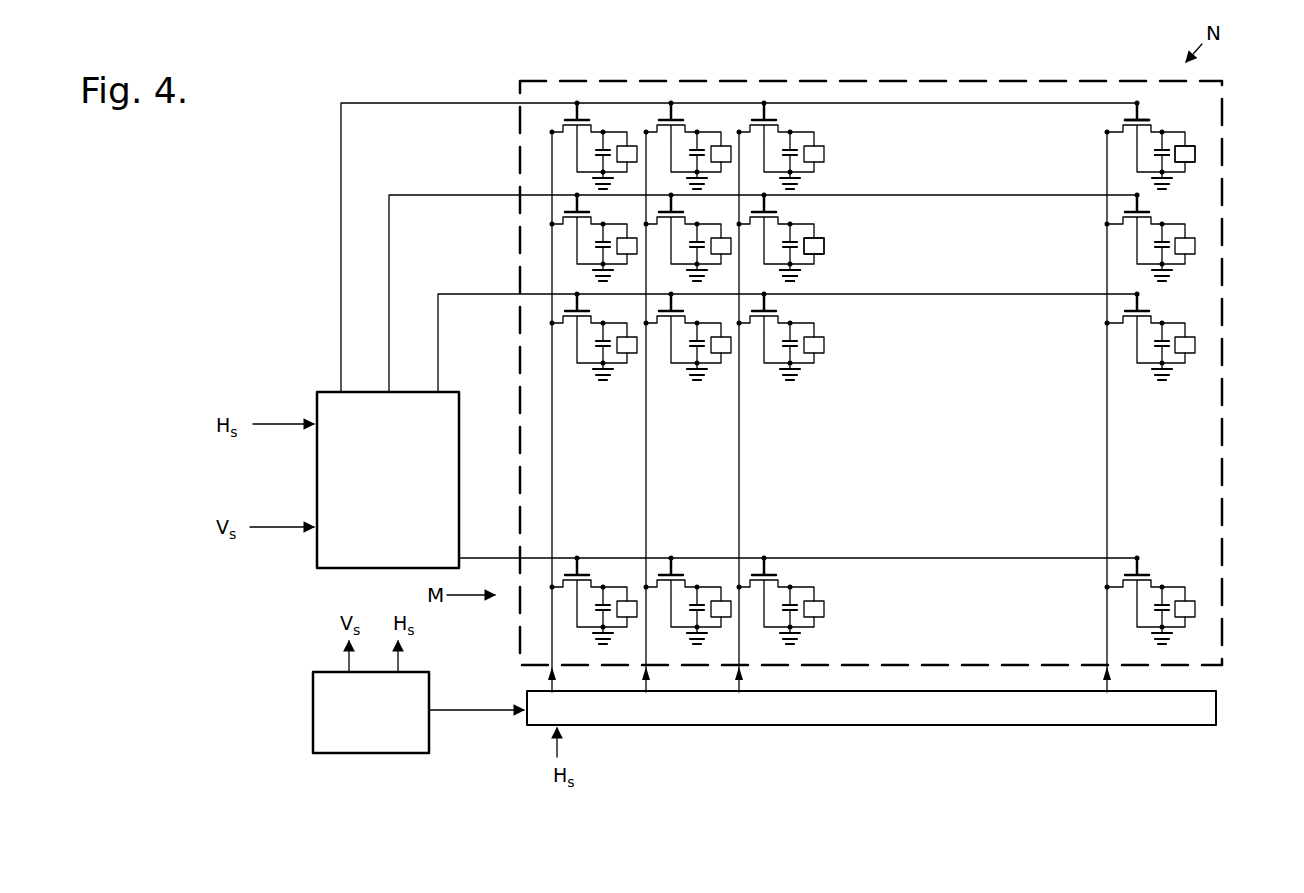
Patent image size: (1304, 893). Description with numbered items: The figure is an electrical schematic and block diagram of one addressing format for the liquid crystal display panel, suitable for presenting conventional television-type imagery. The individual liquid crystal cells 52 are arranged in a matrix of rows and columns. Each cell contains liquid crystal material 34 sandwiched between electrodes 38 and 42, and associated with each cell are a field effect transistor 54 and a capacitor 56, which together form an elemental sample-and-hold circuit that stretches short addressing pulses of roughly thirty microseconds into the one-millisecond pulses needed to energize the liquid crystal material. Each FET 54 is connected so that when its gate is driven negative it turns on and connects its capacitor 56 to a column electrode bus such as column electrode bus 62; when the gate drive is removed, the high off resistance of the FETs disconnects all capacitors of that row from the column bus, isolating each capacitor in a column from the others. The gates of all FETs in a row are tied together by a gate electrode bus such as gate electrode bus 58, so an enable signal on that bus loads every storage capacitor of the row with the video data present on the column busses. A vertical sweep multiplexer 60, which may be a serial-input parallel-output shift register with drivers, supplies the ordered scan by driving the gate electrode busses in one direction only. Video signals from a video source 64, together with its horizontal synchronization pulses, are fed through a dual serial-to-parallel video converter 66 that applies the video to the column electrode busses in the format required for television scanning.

The gate electrode bus 58 is at (410, 103).
The field effect transistor 54 is at (1128, 122).
The liquid crystal cell 52 is at (1100, 158).
The liquid crystal material 34 is at (1189, 148).
The capacitor 56 is at (1166, 153).
The electrode 42 is at (818, 237).
The electrode 38 is at (821, 254).
The column electrode bus 62 is at (1107, 405).
The vertical sweep multiplexer 60 is at (322, 561).
The video source 64 is at (318, 746).
The dual serial-to-parallel video converter 66 is at (1211, 719).